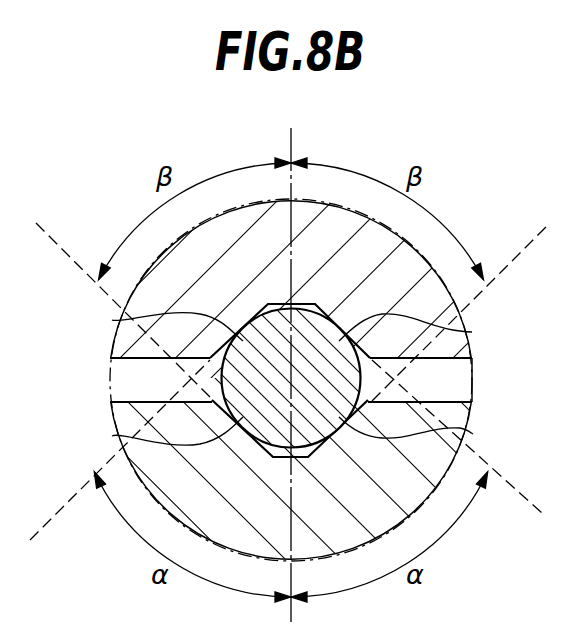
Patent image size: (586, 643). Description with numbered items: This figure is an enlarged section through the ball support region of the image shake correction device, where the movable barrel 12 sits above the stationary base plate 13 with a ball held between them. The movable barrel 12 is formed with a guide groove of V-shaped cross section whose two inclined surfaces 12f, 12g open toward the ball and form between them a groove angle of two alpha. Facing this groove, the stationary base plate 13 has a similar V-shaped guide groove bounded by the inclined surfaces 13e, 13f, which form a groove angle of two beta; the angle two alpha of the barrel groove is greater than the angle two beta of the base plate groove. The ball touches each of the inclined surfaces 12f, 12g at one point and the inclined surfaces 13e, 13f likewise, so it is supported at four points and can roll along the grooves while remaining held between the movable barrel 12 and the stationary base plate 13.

The movable barrel 12 is at (117, 342).
The inclined surface 12g is at (112, 320).
The inclined surface 12f is at (472, 332).
The stationary base plate 13 is at (462, 417).
The inclined surface 13f is at (112, 436).
The inclined surface 13e is at (473, 434).